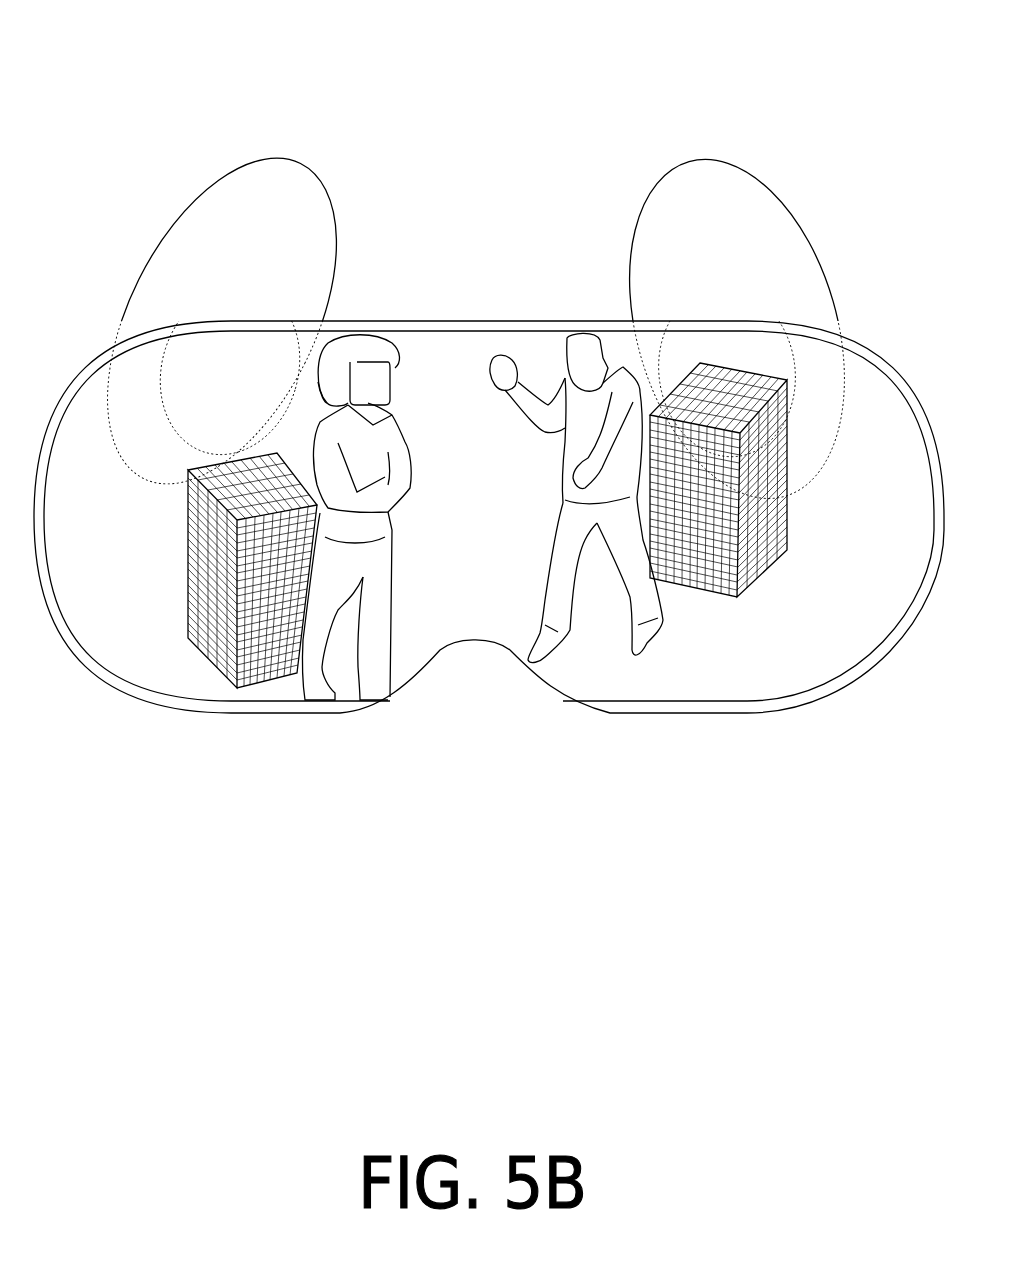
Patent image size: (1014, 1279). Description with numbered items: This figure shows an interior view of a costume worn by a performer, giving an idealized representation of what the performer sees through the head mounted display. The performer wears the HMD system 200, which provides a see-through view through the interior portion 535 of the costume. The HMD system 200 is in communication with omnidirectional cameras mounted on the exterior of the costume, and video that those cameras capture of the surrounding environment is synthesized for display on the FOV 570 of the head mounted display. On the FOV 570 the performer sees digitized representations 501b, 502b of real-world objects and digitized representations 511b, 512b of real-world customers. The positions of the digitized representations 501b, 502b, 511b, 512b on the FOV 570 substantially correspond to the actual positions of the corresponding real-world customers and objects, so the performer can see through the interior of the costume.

The interior portion 535 is at (92, 68).
The HMD system 200 is at (92, 365).
The FOV 570 is at (108, 634).
The digitized representation 501b is at (750, 585).
The digitized representation 502b is at (192, 530).
The digitized representation 511b is at (565, 445).
The digitized representation 512b is at (390, 560).